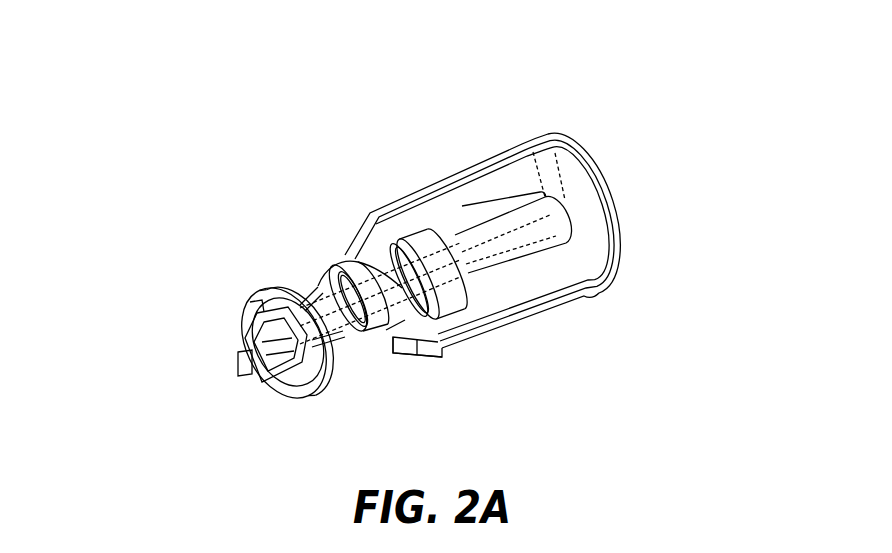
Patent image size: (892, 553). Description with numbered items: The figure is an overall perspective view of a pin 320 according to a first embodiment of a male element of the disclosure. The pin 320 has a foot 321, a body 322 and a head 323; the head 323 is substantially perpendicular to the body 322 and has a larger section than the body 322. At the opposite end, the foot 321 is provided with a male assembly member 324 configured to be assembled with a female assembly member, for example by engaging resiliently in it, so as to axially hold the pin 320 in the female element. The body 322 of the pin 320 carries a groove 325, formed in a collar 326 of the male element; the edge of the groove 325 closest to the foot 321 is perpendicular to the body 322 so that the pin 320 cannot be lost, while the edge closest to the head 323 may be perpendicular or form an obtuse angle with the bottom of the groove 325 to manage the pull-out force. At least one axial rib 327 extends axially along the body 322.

The pin 320 is at (418, 232).
The foot 321 is at (196, 340).
The body 322 is at (557, 194).
The head 323 is at (653, 201).
The male assembly member 324 is at (260, 272).
The groove 325 is at (418, 336).
The collar 326 is at (412, 236).
The axial rib 327 is at (516, 152).